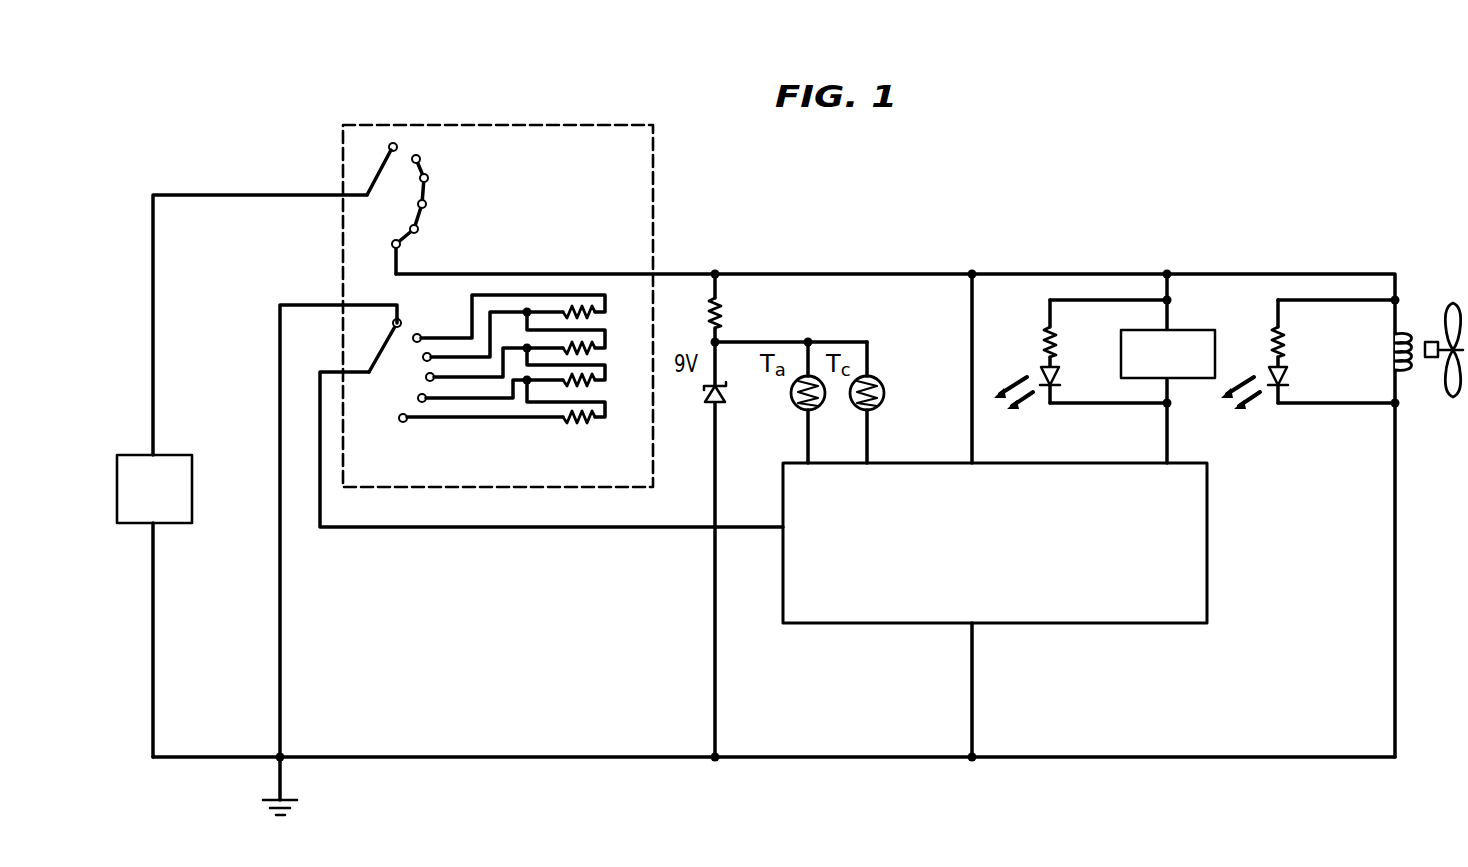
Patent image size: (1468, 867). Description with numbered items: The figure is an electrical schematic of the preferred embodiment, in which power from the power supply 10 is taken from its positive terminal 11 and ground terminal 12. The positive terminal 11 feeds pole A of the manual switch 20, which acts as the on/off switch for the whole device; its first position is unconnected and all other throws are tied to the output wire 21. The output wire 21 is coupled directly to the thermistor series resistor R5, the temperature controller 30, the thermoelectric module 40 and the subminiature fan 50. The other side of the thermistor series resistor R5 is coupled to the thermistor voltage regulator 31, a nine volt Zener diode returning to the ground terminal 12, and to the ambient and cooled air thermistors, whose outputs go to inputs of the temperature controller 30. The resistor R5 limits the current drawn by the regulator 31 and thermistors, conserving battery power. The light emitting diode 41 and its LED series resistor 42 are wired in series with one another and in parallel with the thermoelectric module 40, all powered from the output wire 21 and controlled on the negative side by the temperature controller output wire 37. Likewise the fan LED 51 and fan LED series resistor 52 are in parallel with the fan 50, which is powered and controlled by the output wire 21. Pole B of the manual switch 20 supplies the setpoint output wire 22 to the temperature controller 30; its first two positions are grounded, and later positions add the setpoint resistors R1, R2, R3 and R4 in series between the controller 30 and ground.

The power supply 10 is at (154, 489).
The positive terminal 11 is at (152, 222).
The ground terminal 12 is at (264, 802).
The manual switch 20 is at (525, 306).
The output wire 21 is at (688, 273).
The setpoint output wire 22 is at (475, 530).
The temperature controller 30 is at (1208, 492).
The thermistor voltage regulator 31 is at (705, 391).
The output wire 37 is at (1165, 435).
The thermoelectric module 40 is at (1191, 330).
The light emitting diode 41 is at (1042, 385).
The LED series resistor 42 is at (1067, 333).
The subminiature fan 50 is at (1427, 342).
The fan LED 51 is at (1270, 385).
The fan LED series resistor 52 is at (1295, 333).
The setpoint resistor R1 is at (598, 318).
The setpoint resistor R2 is at (598, 354).
The setpoint resistor R3 is at (598, 386).
The setpoint resistor R4 is at (596, 424).
The thermistor series resistor R5 is at (722, 309).